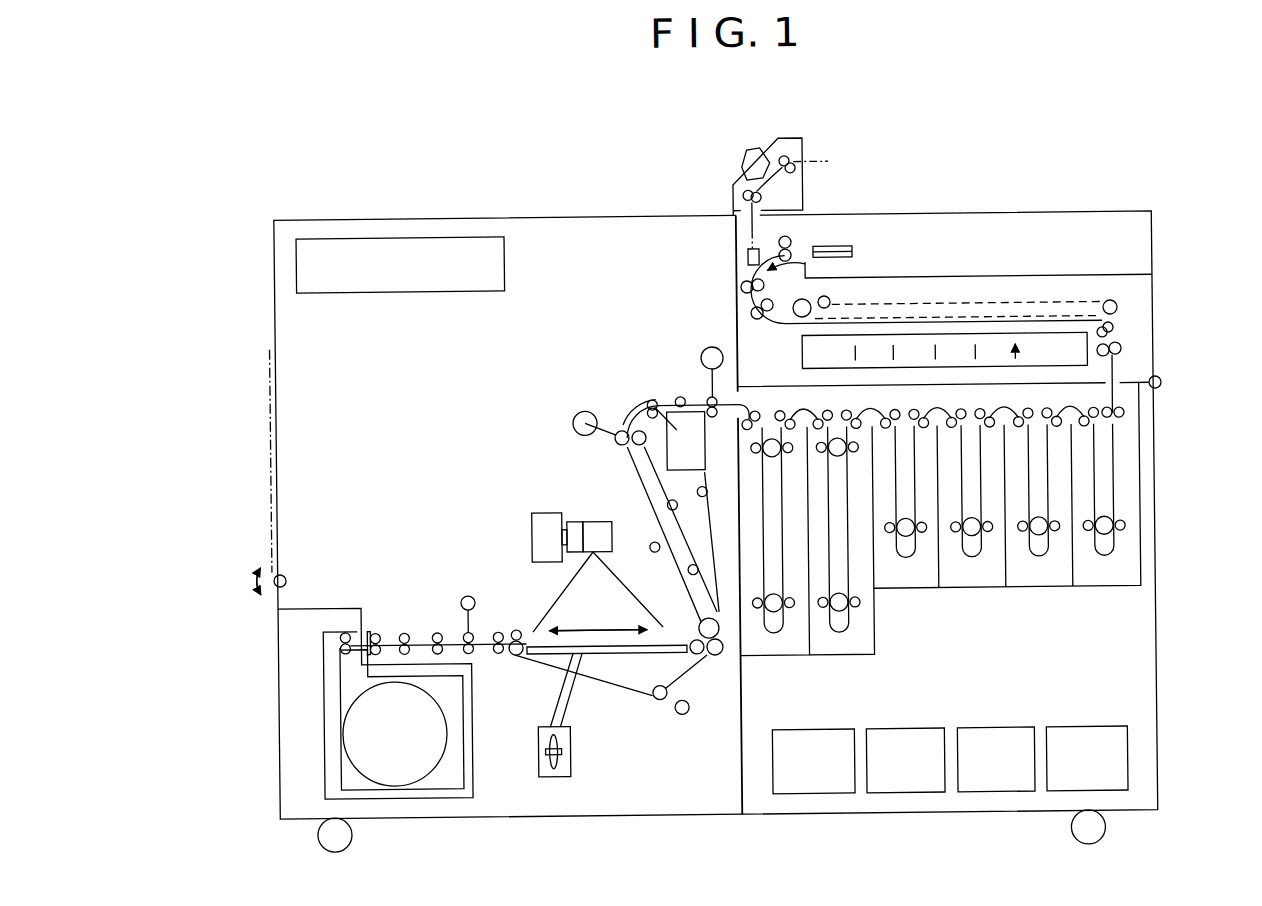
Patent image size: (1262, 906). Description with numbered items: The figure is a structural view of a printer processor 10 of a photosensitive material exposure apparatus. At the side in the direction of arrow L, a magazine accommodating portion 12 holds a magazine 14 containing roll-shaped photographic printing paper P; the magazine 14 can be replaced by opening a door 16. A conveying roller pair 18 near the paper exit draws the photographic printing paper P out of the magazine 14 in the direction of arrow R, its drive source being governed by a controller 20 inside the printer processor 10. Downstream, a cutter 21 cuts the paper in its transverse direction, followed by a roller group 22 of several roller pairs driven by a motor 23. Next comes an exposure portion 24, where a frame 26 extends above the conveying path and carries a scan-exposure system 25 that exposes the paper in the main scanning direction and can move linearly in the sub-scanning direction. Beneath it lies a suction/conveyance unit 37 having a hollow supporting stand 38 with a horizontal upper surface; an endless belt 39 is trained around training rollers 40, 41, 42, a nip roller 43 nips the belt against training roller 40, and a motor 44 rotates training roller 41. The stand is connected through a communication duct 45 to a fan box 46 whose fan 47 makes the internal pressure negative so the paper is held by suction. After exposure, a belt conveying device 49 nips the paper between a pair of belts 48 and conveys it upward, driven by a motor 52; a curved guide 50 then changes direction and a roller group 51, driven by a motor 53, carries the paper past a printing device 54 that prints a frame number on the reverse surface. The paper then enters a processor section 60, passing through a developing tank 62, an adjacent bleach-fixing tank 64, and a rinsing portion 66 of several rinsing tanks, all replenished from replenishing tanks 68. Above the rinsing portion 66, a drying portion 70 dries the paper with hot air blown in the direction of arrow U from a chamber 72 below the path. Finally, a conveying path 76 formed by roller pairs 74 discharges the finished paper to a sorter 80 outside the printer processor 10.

The printer processor 10 is at (1107, 200).
The magazine accommodating portion 12 is at (292, 797).
The magazine 14 is at (324, 736).
The door 16 is at (273, 425).
The conveying roller pair 18 is at (343, 636).
The controller 20 is at (298, 266).
The cutter 21 is at (369, 624).
The roller group 22 is at (405, 627).
The motor 23 is at (467, 594).
The exposure portion 24 is at (540, 505).
The scan-exposure system 25 is at (597, 520).
The frame 26 is at (574, 520).
The suction/conveyance unit 37 is at (541, 666).
The supporting stand 38 is at (658, 699).
The endless belt 39 is at (628, 694).
The training roller 40 is at (527, 654).
The training roller 41 is at (707, 638).
The training roller 42 is at (681, 714).
The nip roller 43 is at (517, 630).
The motor 44 is at (713, 655).
The communication duct 45 is at (572, 687).
The fan box 46 is at (536, 765).
The fan 47 is at (563, 767).
The pair of belts 48 is at (710, 522).
The belt conveying device 49 is at (610, 450).
The curved guide 50 is at (620, 428).
The roller group 51 is at (682, 390).
The motor 52 is at (586, 410).
The motor 53 is at (713, 346).
The printing device 54 is at (655, 398).
The processor section 60 is at (993, 212).
The developing tank 62 is at (796, 647).
The bleach-fixing tank 64 is at (862, 647).
The rinsing portion 66 is at (1140, 606).
The replenishing tanks 68 is at (1012, 720).
The drying portion 70 is at (1132, 325).
The chamber 72 is at (1082, 365).
The roller pairs 74 is at (760, 315).
The conveying path 76 is at (810, 266).
The sorter 80 is at (851, 240).
The photographic printing paper P is at (338, 671).
The arrow U is at (978, 350).
The arrow L is at (716, 830).
The arrow R is at (865, 830).